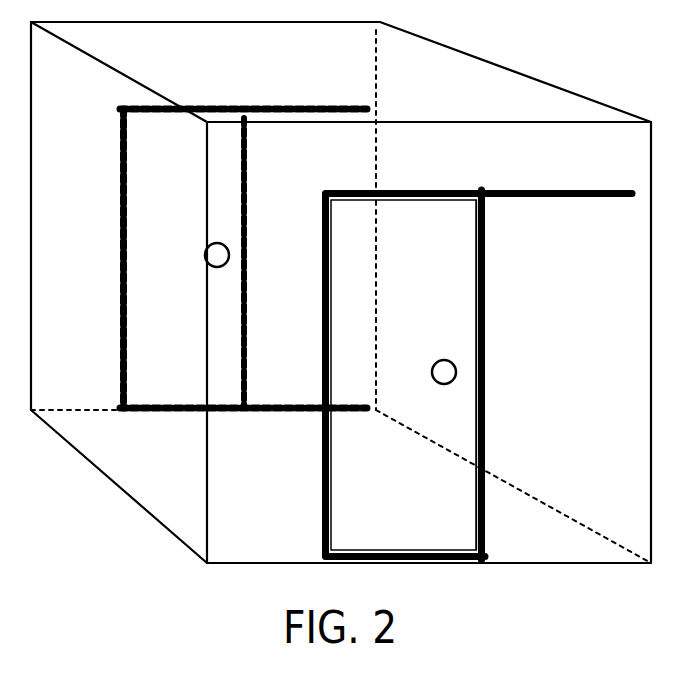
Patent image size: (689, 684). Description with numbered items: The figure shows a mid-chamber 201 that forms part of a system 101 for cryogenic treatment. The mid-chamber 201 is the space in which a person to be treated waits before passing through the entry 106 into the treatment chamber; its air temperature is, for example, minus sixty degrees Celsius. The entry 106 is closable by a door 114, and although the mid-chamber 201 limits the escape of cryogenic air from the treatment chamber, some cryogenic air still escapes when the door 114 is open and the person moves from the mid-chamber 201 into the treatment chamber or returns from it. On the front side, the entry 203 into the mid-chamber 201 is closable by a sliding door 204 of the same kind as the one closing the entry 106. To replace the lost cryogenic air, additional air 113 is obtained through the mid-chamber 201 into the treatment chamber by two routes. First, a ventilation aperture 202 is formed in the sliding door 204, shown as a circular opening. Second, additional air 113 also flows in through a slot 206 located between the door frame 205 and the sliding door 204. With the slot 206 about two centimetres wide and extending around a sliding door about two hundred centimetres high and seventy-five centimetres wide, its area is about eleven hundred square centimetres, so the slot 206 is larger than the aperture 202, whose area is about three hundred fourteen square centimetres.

The system 101 is at (620, 74).
The mid-chamber 201 is at (519, 74).
The entry 106 is at (178, 313).
The door 114 is at (155, 208).
The additional air 113 is at (228, 262).
The ventilation aperture 202 is at (447, 360).
The entry 203 is at (401, 456).
The sliding door 204 is at (414, 280).
The door frame 205 is at (486, 263).
The slot 206 is at (486, 333).